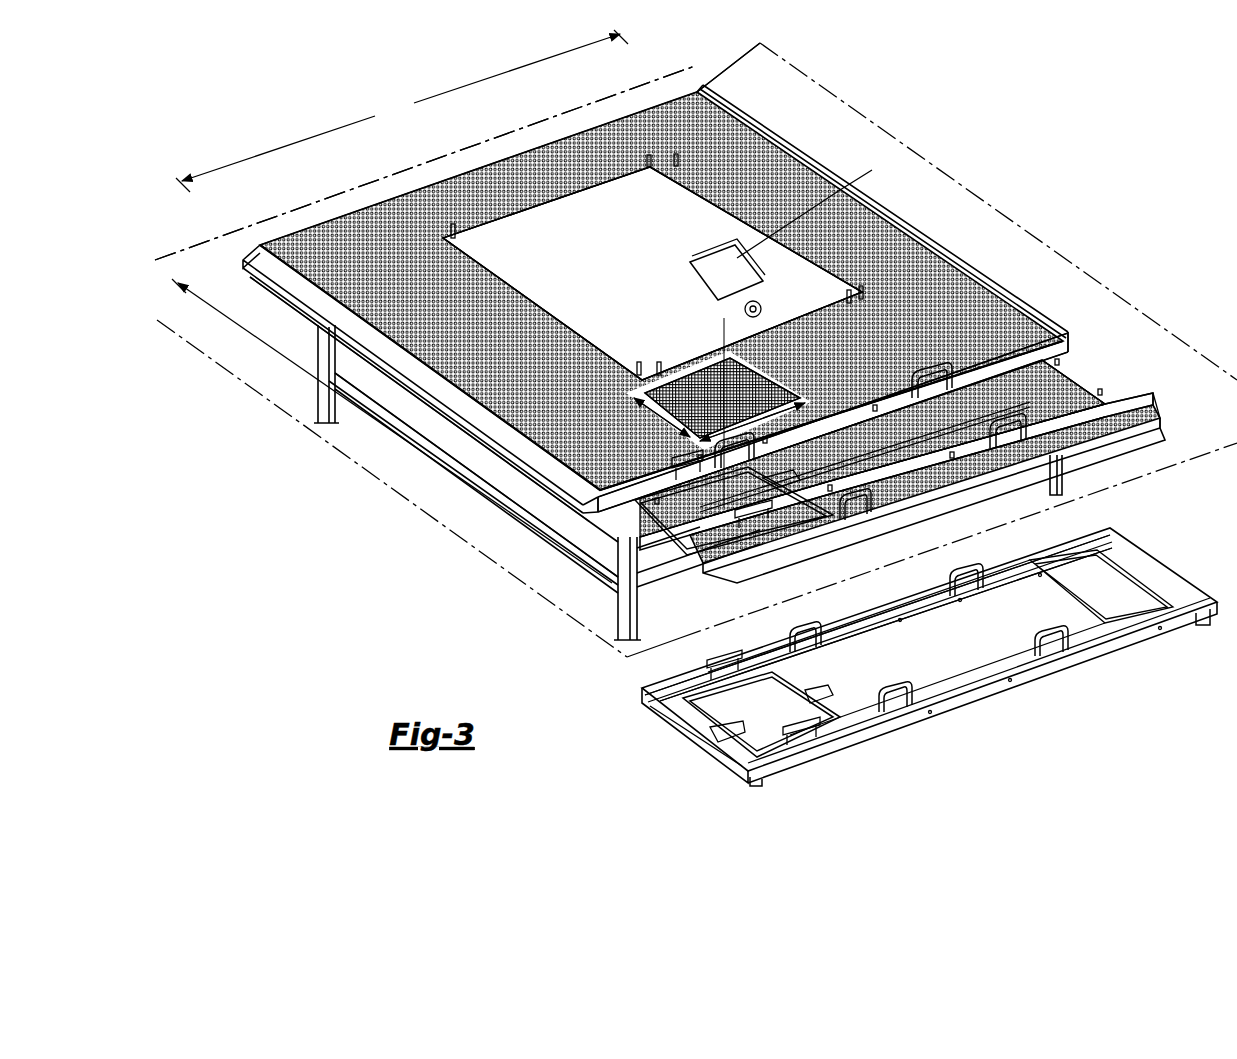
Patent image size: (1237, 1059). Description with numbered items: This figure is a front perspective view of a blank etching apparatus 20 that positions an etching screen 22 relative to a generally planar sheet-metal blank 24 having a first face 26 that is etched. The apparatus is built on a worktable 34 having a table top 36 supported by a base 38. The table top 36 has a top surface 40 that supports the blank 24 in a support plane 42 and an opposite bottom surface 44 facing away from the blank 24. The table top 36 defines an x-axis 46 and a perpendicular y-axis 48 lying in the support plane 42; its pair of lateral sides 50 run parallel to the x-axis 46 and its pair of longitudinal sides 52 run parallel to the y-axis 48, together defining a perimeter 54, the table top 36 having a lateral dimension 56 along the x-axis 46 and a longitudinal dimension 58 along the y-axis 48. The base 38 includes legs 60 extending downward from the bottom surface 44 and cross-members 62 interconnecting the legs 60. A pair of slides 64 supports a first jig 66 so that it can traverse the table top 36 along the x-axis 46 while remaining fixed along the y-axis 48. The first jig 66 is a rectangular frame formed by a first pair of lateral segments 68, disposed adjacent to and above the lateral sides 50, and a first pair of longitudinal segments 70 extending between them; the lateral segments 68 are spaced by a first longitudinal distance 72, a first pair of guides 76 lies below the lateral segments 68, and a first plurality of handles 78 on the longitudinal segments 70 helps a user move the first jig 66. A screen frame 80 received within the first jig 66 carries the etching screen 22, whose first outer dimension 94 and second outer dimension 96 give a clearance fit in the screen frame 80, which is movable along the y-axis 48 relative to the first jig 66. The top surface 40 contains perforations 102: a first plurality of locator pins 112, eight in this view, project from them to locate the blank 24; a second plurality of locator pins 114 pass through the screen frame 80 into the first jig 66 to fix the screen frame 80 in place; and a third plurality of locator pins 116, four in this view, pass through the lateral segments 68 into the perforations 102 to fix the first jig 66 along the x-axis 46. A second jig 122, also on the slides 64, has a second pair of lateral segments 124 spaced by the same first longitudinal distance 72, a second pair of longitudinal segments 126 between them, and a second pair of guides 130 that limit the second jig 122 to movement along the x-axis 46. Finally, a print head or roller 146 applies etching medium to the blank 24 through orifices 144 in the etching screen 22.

The blank etching apparatus 20 is at (1015, 165).
The etching screen 22 is at (752, 356).
The blank 24 is at (606, 212).
The first face 26 is at (577, 256).
The worktable 34 is at (312, 603).
The table top 36 is at (278, 218).
The base 38 is at (574, 520).
The top surface 40 is at (400, 210).
The support plane 42 is at (1200, 396).
The bottom surface 44 is at (973, 500).
The x-axis 46 is at (440, 353).
The y-axis 48 is at (1086, 402).
The lateral sides 50 is at (893, 235).
The longitudinal sides 52 is at (496, 150).
The perimeter 54 is at (697, 88).
The lateral dimension 56 is at (395, 402).
The longitudinal dimension 58 is at (402, 111).
The legs 60 is at (318, 338).
The cross-members 62 is at (646, 584).
The slides 64 is at (243, 260).
The first jig 66 is at (1114, 343).
The first pair of lateral segments 68 is at (1067, 350).
The first pair of longitudinal segments 70 is at (1060, 332).
The first longitudinal distance 72 is at (985, 445).
The first pair of guides 76 is at (700, 585).
The first plurality of handles 78 is at (928, 388).
The screen frame 80 is at (700, 533).
The first outer dimension 94 is at (752, 422).
The second outer dimension 96 is at (662, 417).
The perforations 102 is at (362, 241).
The first plurality of locator pins 112 is at (676, 167).
The second plurality of locator pins 114 is at (876, 426).
The third plurality of locator pins 116 is at (1058, 360).
The second jig 122 is at (1160, 577).
The second pair of lateral segments 124 is at (1122, 548).
The second pair of longitudinal segments 126 is at (1113, 640).
The second pair of guides 130 is at (1201, 626).
The orifices 144 is at (716, 388).
The print head and/or roller 146 is at (690, 290).